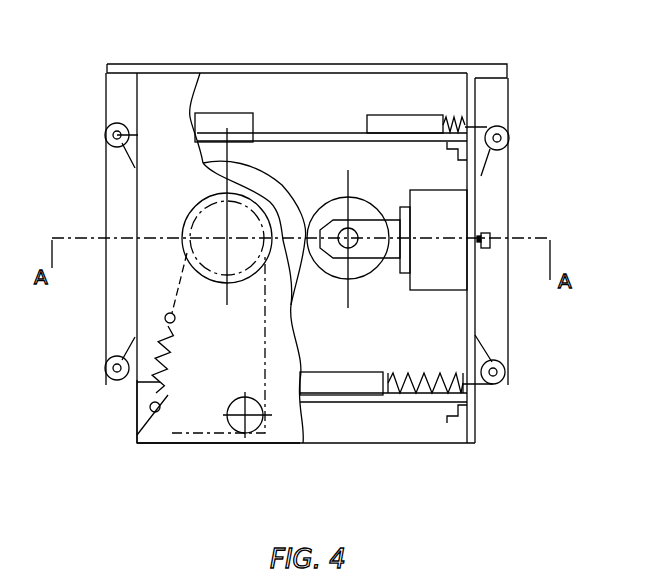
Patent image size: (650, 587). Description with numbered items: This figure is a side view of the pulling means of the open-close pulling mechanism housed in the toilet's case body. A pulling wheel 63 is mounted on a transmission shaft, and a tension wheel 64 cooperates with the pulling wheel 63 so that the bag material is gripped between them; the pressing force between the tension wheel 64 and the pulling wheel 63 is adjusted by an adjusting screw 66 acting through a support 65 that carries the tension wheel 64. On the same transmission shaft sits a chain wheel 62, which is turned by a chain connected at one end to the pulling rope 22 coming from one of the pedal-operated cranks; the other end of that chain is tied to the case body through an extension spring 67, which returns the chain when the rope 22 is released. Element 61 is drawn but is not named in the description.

The pulling rope 22 is at (187, 438).
The shaft hole 61 is at (257, 423).
The chain wheel 62 is at (212, 255).
The pulling wheel 63 is at (253, 173).
The tension wheel 64 is at (347, 195).
The support 65 is at (428, 210).
The adjusting screw 66 is at (492, 236).
The extension spring 67 is at (157, 352).